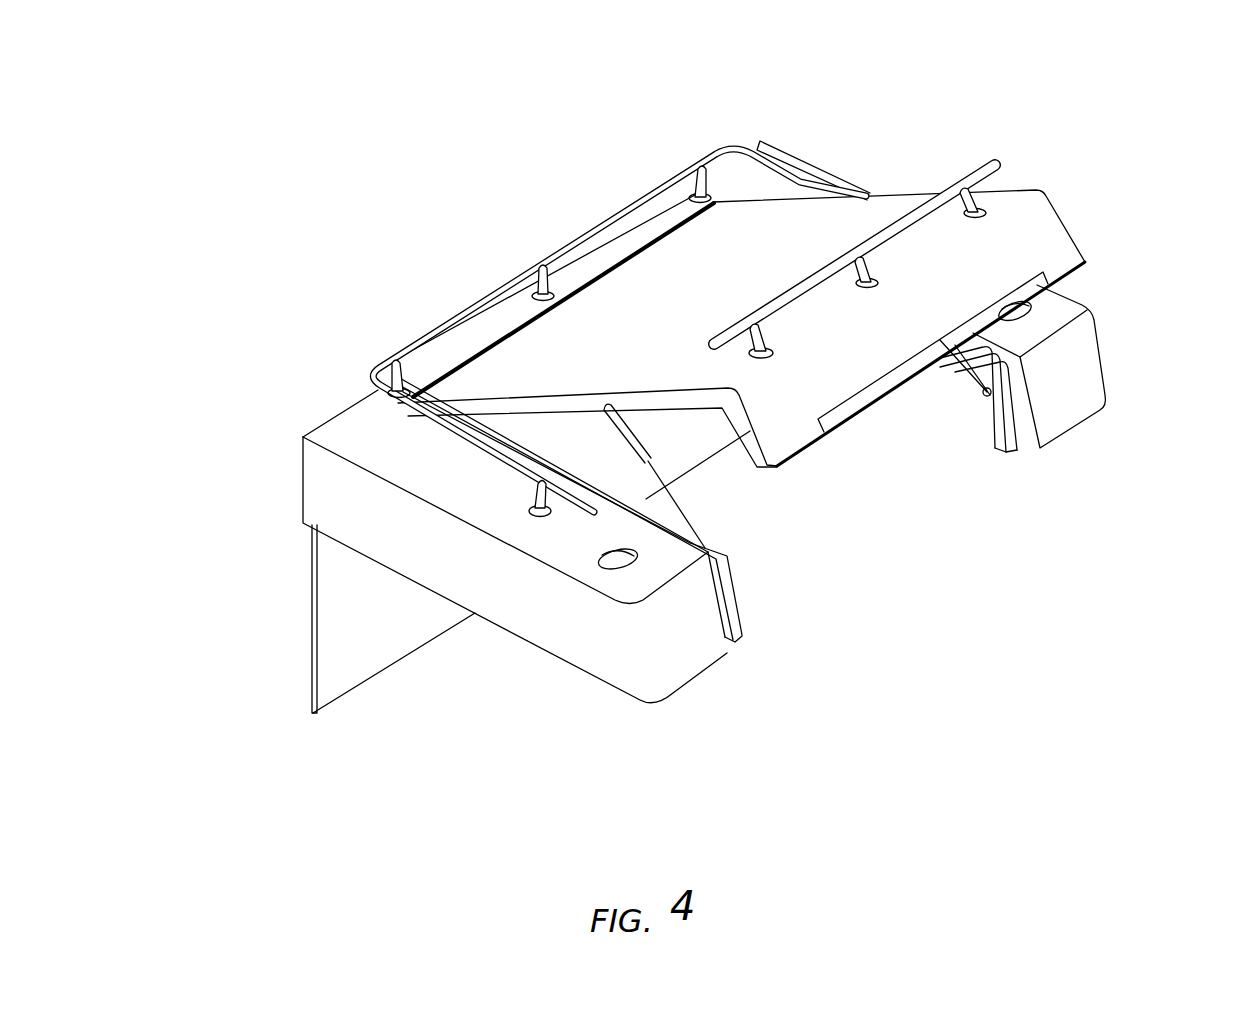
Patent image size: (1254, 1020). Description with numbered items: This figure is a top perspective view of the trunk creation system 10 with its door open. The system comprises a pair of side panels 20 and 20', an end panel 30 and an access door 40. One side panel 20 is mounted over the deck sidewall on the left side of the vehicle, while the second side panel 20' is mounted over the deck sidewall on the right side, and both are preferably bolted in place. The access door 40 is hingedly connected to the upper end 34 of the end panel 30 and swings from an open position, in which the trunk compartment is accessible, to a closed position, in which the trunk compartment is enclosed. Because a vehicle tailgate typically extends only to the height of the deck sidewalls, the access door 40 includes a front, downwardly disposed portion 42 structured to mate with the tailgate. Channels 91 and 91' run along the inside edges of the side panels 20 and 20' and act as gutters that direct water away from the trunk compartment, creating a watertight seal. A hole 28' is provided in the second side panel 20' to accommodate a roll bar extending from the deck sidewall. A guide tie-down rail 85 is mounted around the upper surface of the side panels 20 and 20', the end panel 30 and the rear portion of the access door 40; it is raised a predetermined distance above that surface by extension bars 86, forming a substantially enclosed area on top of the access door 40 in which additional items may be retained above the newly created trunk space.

The trunk creation system 10 is at (831, 134).
The side panel 20 is at (515, 571).
The second side panel 20' is at (1092, 366).
The hole 28' is at (1090, 292).
The end panel 30 is at (310, 575).
The upper end of the end panel 34 is at (480, 344).
The access door 40 is at (697, 304).
The front downwardly disposed portion 42 is at (812, 381).
The guide tie-down rail 85 is at (598, 220).
The extension bar 86 is at (985, 190).
The channel 91 is at (617, 544).
The channel 91' is at (1038, 438).